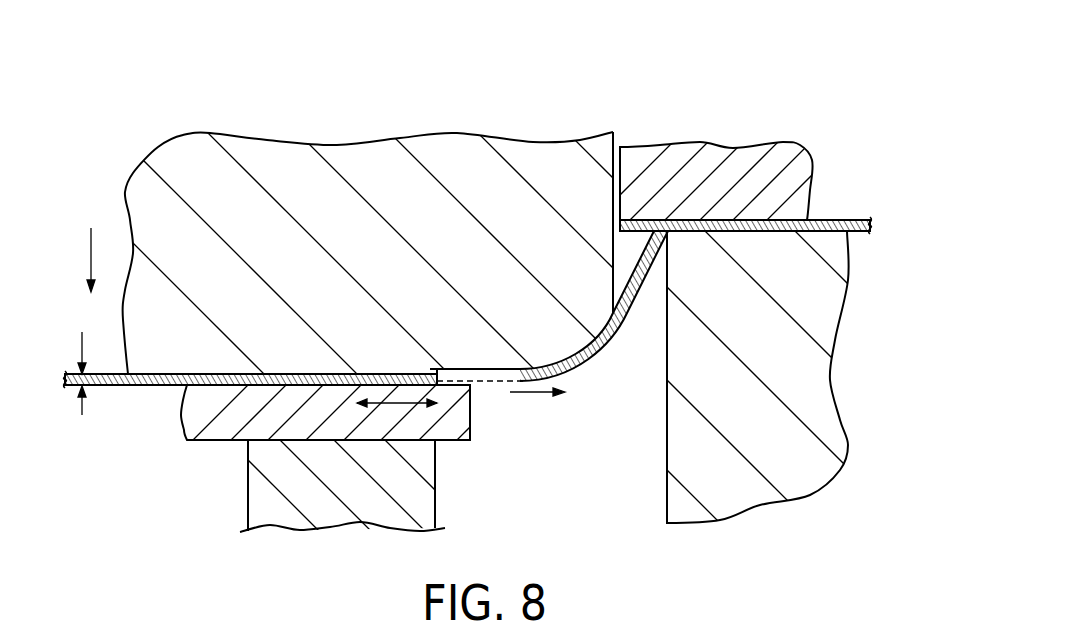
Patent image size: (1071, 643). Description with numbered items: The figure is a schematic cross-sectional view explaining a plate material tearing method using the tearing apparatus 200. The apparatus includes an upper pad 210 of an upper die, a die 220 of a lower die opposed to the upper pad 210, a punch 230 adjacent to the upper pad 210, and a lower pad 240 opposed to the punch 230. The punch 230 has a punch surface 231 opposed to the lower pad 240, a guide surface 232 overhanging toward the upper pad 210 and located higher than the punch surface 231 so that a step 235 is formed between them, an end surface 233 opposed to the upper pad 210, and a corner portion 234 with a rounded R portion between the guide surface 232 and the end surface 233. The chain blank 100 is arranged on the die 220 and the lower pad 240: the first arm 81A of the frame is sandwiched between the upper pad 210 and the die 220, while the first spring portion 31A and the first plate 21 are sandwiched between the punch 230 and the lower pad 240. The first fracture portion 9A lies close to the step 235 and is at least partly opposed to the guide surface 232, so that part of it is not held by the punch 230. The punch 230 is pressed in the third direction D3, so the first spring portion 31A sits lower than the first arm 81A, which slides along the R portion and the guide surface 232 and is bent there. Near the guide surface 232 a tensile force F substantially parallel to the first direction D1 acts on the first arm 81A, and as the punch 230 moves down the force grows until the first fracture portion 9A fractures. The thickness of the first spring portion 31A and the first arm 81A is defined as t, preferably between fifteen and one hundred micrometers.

The tearing apparatus 200 is at (724, 100).
The punch 230 is at (346, 140).
The upper pad 210 is at (653, 147).
The die 220 is at (667, 498).
The lower pad 240 is at (250, 500).
The first plate 21 is at (215, 432).
The chain blank 100 is at (128, 396).
The first spring portion 31A is at (283, 373).
The first arm 81A is at (836, 221).
The punch surface 231 is at (168, 387).
The guide surface 232 is at (500, 383).
The end surface 233 is at (603, 268).
The corner portion 234 is at (589, 366).
The step 235 is at (432, 370).
The first fracture portion 9A is at (445, 368).
The first direction D1 is at (397, 415).
The third direction D3 is at (76, 260).
The thickness t is at (82, 360).
The tensile force F is at (537, 409).